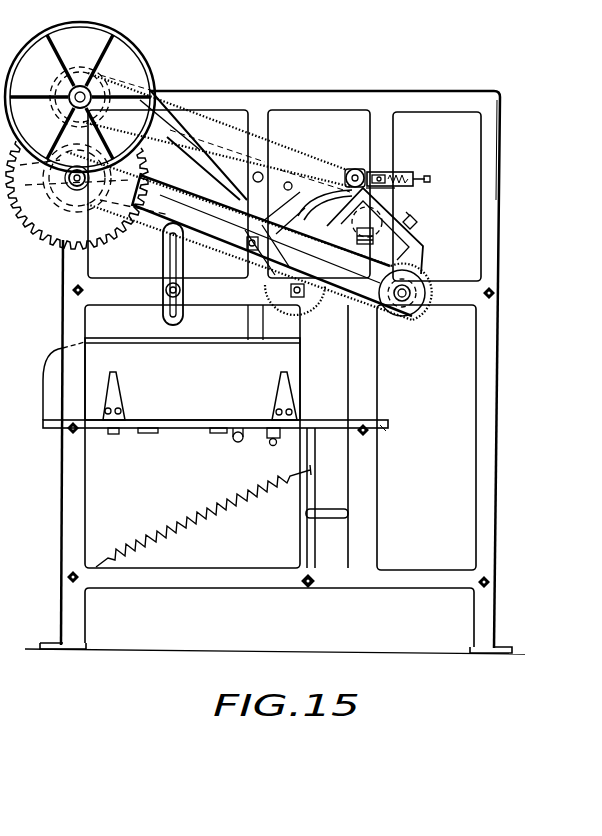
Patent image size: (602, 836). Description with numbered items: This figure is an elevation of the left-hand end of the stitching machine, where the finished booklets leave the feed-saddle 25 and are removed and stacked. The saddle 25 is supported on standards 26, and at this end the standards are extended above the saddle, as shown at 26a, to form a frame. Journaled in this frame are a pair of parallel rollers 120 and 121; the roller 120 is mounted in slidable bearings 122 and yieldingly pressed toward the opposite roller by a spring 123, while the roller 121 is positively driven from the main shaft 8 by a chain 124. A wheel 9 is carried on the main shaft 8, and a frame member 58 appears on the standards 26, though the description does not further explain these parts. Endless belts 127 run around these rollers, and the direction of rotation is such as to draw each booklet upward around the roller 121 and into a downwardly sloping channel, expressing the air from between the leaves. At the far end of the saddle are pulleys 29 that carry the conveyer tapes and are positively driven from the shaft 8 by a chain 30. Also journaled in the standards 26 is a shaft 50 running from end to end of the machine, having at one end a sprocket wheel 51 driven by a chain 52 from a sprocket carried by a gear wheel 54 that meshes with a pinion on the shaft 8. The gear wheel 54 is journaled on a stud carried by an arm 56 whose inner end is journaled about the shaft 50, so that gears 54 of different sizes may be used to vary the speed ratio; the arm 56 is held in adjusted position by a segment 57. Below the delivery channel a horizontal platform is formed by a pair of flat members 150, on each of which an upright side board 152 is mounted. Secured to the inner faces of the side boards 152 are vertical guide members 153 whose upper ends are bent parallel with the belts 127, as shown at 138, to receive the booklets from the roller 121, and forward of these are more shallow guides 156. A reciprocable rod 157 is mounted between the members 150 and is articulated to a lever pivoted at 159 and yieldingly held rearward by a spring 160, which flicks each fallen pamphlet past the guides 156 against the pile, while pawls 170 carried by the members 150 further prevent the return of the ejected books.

The main shaft 8 is at (66, 92).
The drive wheel 9 is at (150, 68).
The chain 124 is at (226, 120).
The roller 121 is at (357, 169).
The slidable bearings 122 is at (387, 170).
The spring 123 is at (413, 172).
The roller 120 is at (388, 190).
The pulleys 29 is at (400, 213).
The feed-saddle 25 is at (424, 243).
The extended standard portion 26a is at (490, 129).
The standards 26 is at (492, 532).
The chain 30 is at (197, 171).
The bent upper end of guide member 138 is at (299, 192).
The endless belts 127 is at (300, 205).
The gear wheel 54 is at (50, 217).
The arm 56 is at (249, 236).
The segment 57 is at (163, 303).
The shallow guides 156 is at (248, 331).
The vertical guide members 153 is at (263, 333).
The chain 52 is at (362, 313).
The sprocket wheel 51 is at (416, 304).
The shaft 50 is at (403, 306).
The side board 152 is at (171, 379).
The reciprocable rod 157 is at (132, 431).
The flat members 150 is at (189, 428).
The pawls 170 is at (239, 442).
The cross bar 58 is at (316, 509).
The spring 160 is at (203, 516).
The pivot 159 is at (307, 584).